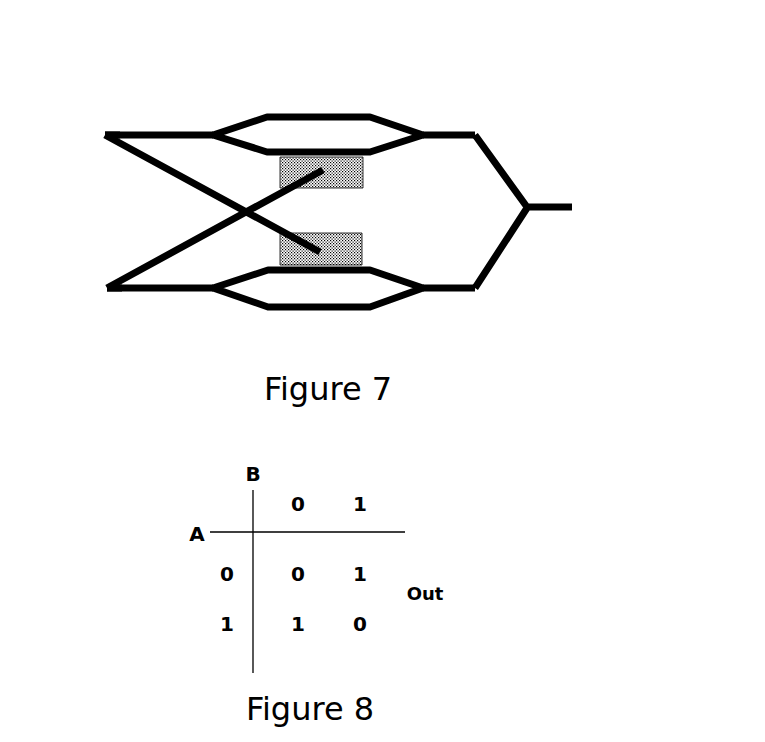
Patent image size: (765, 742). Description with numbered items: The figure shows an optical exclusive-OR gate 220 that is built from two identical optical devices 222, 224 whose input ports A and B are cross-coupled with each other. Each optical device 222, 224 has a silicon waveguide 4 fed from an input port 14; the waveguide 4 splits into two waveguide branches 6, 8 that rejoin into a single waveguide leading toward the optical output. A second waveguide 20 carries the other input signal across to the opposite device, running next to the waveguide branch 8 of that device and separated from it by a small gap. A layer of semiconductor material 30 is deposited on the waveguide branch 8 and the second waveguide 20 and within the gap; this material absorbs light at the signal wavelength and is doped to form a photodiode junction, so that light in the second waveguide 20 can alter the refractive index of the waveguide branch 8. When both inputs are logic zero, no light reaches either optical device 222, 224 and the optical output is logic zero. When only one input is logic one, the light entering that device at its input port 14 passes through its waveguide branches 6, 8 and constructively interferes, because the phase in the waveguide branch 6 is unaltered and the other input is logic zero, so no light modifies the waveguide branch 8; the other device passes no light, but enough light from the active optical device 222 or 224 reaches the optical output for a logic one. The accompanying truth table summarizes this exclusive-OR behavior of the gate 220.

The optical exclusive-OR gate 220 is at (562, 83).
The input port 14 is at (104, 131).
The waveguide 4 is at (167, 133).
The second waveguide 20 is at (155, 170).
The waveguide branch 6 is at (322, 114).
The semiconductor material 30 is at (350, 176).
The waveguide branch 8 is at (400, 146).
The optical device 222 is at (429, 123).
The optical device 224 is at (413, 299).